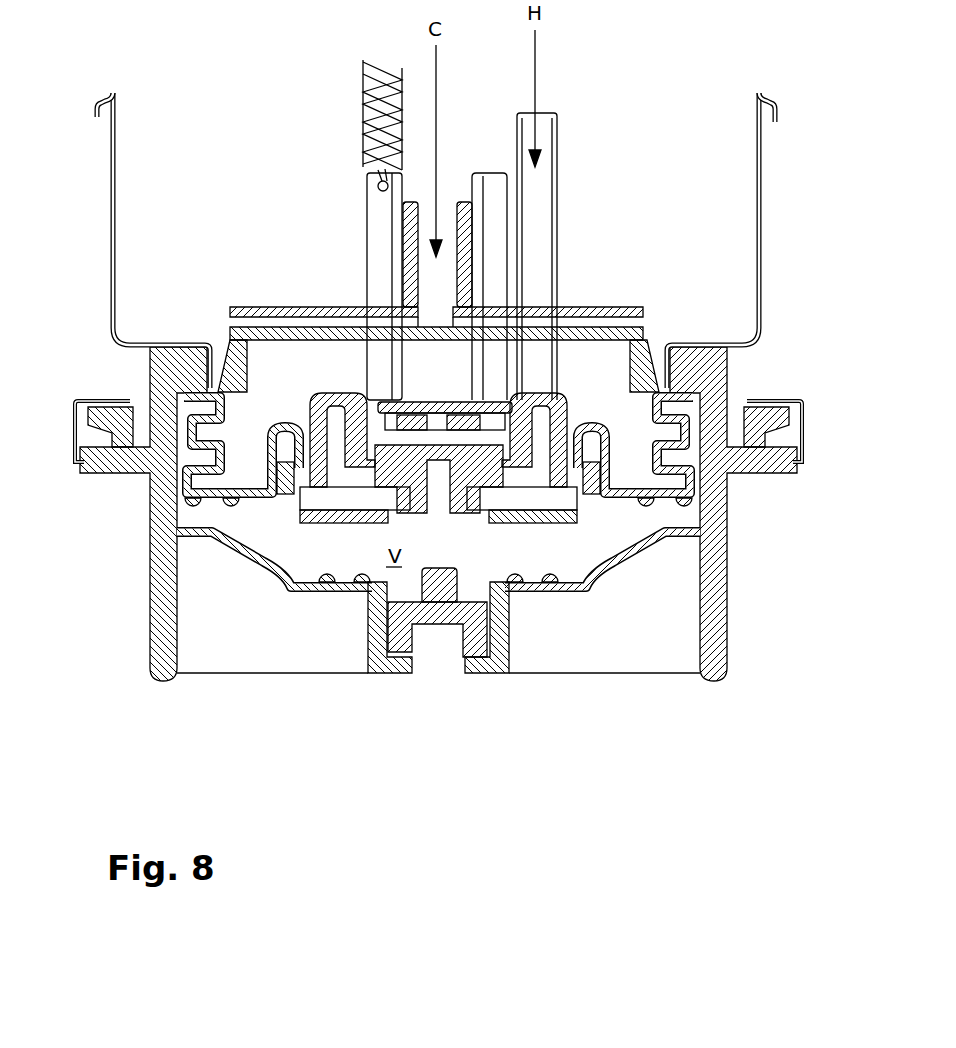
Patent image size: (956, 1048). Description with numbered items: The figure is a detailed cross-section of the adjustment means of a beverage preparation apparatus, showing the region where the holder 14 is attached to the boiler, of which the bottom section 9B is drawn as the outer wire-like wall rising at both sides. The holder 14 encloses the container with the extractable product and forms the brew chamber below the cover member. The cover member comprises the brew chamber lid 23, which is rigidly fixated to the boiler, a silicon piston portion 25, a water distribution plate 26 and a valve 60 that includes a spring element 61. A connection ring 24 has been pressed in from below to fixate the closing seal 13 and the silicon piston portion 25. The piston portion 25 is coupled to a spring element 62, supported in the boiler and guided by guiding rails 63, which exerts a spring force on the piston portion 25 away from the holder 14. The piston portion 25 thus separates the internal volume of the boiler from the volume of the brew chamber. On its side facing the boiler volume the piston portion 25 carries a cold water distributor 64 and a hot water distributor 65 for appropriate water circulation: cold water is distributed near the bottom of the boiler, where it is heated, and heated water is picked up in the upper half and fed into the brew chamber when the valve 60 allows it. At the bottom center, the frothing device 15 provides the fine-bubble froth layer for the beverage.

The bottom section 9B is at (113, 251).
The closing seal 13 is at (100, 437).
The holder 14 is at (730, 657).
The frothing device 15 is at (443, 613).
The brew chamber lid 23 is at (73, 422).
The connection ring 24 is at (153, 402).
The silicon piston portion 25 is at (180, 518).
The water distribution plate 26 is at (303, 500).
The valve 60 is at (400, 497).
The spring element 61 is at (380, 420).
The spring element 62 is at (363, 122).
The guiding rails 63 is at (372, 220).
The cold water distributor 64 is at (583, 308).
The hot water distributor 65 is at (453, 402).